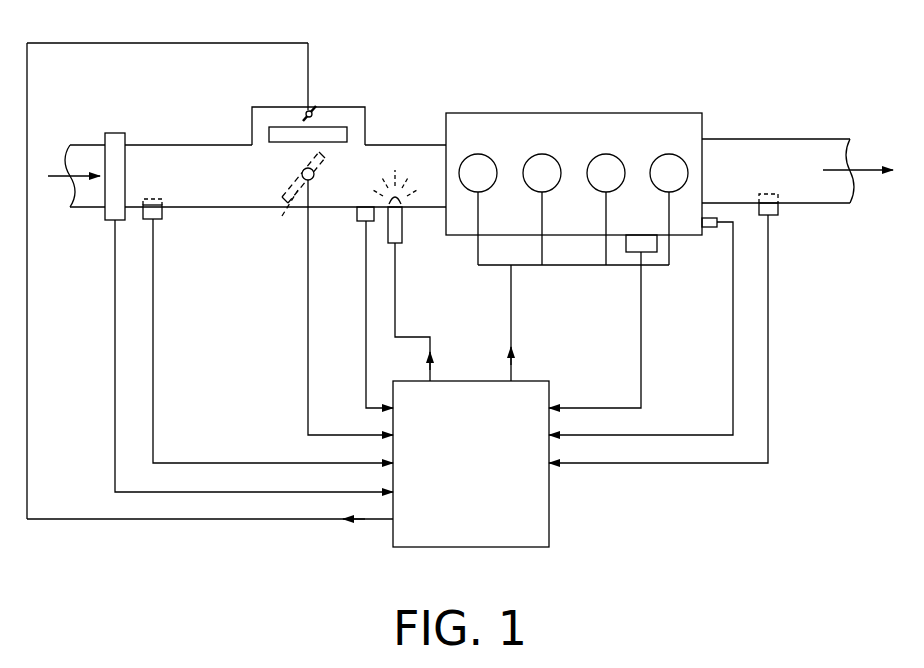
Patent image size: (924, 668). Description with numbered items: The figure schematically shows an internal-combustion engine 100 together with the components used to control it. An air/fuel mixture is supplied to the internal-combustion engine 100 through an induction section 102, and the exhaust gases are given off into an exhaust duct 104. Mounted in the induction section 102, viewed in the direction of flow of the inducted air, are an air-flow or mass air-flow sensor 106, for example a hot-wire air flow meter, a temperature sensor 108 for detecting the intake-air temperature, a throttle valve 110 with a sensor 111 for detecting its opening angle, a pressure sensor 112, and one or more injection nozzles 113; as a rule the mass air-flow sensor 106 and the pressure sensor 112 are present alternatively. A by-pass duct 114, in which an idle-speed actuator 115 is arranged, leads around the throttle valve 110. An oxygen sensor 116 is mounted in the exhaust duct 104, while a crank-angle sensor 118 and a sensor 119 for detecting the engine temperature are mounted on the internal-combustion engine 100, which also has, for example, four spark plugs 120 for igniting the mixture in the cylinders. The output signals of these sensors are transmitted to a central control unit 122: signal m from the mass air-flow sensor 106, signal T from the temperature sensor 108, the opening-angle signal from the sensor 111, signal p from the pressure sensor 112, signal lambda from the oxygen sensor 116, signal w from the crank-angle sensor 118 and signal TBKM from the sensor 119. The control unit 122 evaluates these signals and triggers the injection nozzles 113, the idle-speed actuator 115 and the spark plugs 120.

The internal-combustion engine 100 is at (635, 122).
The induction section 102 is at (163, 152).
The exhaust duct 104 is at (777, 152).
The mass air-flow sensor 106 is at (112, 133).
The temperature sensor 108 is at (160, 217).
The throttle valve 110 is at (279, 219).
The sensor for detecting the opening angle of the throttle valve 111 is at (303, 163).
The pressure sensor 112 is at (357, 212).
The injection nozzle 113 is at (402, 225).
The by-pass duct 114 is at (342, 107).
The idle-speed actuator 115 is at (305, 112).
The oxygen sensor 116 is at (778, 210).
The crank-angle sensor 118 is at (708, 228).
The sensor for detecting the temperature of the internal-combustion engine 119 is at (633, 253).
The spark plug 120 is at (482, 148).
The central control unit 122 is at (483, 547).